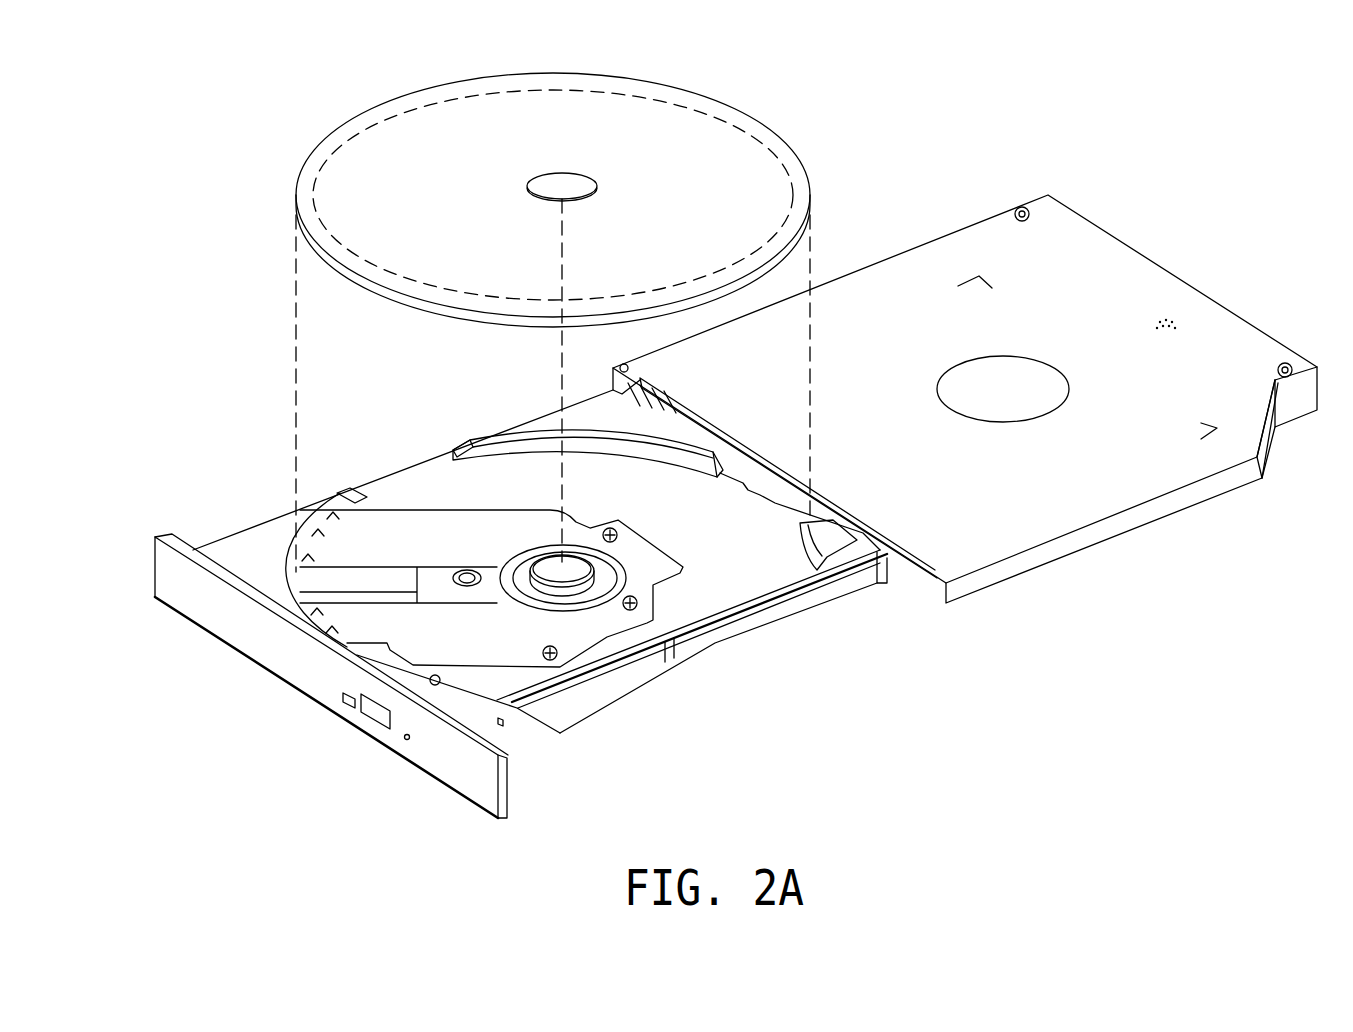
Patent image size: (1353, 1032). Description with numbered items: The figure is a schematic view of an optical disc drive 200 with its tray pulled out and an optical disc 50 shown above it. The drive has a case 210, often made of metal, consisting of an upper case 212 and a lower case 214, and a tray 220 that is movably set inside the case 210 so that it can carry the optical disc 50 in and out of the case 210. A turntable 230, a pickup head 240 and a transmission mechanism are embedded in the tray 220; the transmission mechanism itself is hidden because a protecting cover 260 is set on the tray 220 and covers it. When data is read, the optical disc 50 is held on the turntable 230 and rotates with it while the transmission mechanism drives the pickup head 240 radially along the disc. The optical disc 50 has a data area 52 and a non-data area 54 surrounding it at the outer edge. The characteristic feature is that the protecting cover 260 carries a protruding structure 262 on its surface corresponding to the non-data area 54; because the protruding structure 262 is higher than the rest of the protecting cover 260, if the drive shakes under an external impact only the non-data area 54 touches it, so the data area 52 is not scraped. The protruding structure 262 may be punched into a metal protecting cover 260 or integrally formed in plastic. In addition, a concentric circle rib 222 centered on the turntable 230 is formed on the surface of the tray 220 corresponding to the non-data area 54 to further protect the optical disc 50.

The optical disc 50 is at (807, 178).
The data area 52 is at (688, 168).
The non-data area 54 is at (787, 153).
The optical disc drive 200 is at (1215, 770).
The case 210 is at (965, 437).
The upper case 212 is at (972, 542).
The lower case 214 is at (928, 582).
The tray 220 is at (240, 548).
The concentric circle rib 222 is at (522, 450).
The turntable 230 is at (565, 576).
The pickup head 240 is at (468, 580).
The protecting cover 260 is at (413, 638).
The protruding structure 262 is at (323, 631).